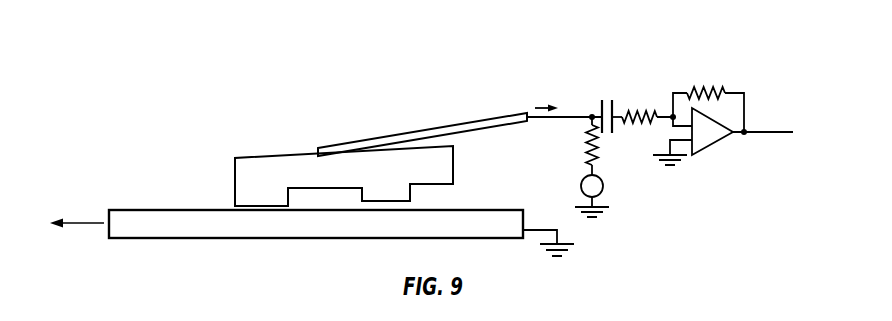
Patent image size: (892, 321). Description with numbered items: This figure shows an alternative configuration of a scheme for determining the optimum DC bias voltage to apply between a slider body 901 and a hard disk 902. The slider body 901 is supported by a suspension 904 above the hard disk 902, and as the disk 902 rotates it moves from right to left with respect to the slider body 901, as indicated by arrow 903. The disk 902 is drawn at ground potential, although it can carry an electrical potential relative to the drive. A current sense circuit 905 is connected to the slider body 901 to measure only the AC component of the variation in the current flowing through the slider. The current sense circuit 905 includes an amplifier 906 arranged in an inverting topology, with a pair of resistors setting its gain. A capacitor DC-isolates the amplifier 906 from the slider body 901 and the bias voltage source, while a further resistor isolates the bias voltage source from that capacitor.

The slider body 901 is at (248, 167).
The hard disk 902 is at (195, 228).
The arrow 903 is at (90, 225).
The suspension 904 is at (400, 134).
The current sense circuit 905 is at (657, 123).
The amplifier 906 is at (704, 148).